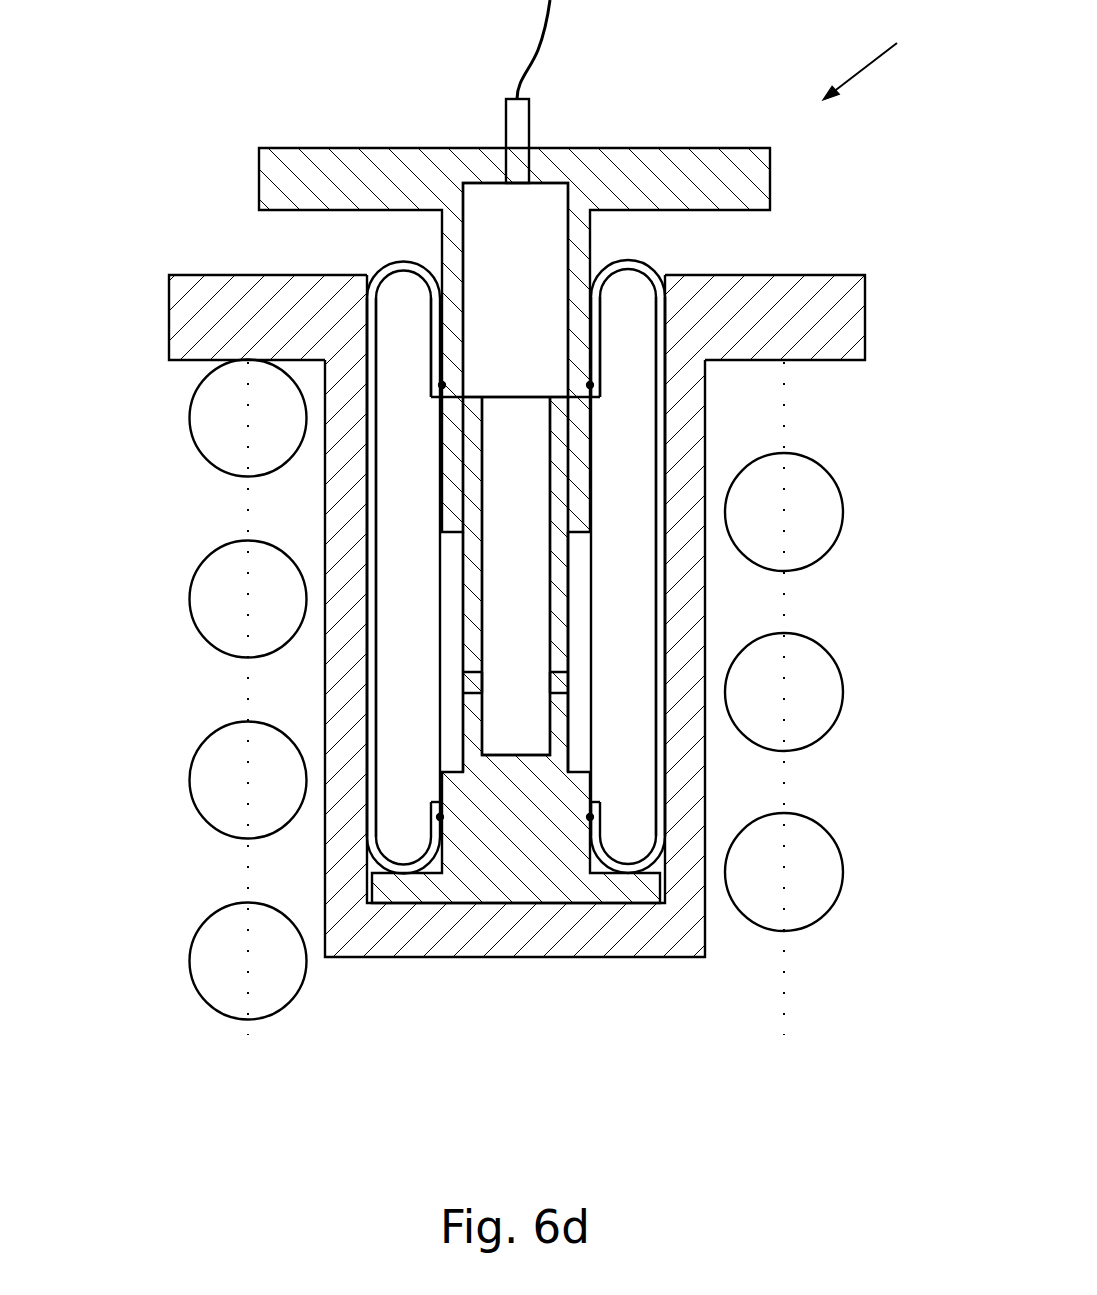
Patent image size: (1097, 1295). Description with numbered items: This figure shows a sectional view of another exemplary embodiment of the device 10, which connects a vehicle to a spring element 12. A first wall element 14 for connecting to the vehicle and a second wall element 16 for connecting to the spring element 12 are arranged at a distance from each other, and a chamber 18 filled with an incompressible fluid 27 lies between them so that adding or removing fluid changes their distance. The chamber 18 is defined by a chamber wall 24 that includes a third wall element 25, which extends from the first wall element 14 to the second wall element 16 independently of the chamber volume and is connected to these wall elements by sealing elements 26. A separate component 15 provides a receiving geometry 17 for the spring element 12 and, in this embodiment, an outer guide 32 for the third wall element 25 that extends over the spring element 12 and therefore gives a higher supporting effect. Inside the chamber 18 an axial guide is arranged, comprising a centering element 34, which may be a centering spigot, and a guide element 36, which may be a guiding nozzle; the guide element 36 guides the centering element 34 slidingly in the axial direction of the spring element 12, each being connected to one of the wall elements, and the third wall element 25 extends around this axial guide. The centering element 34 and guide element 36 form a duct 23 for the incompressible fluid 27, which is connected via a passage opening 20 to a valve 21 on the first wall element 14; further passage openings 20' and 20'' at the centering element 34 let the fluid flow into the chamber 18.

The device 10 is at (886, 52).
The spring element 12 is at (843, 882).
The first wall element 14 is at (358, 150).
The separate component 15 is at (355, 957).
The second wall element 16 is at (421, 893).
The receiving geometry 17 is at (866, 328).
The chamber 18 is at (407, 455).
The passage opening 20 is at (515, 290).
The further passage opening 20' is at (516, 533).
The further passage opening 20'' is at (516, 652).
The valve 21 is at (532, 120).
The duct 23 is at (507, 493).
The chamber wall 24 is at (440, 520).
The third wall element 25 is at (650, 270).
The sealing element 26 is at (445, 386).
The incompressible fluid 27 is at (443, 718).
The outer guide 32 is at (368, 707).
The centering element 34 is at (569, 580).
The guide element 36 is at (623, 507).